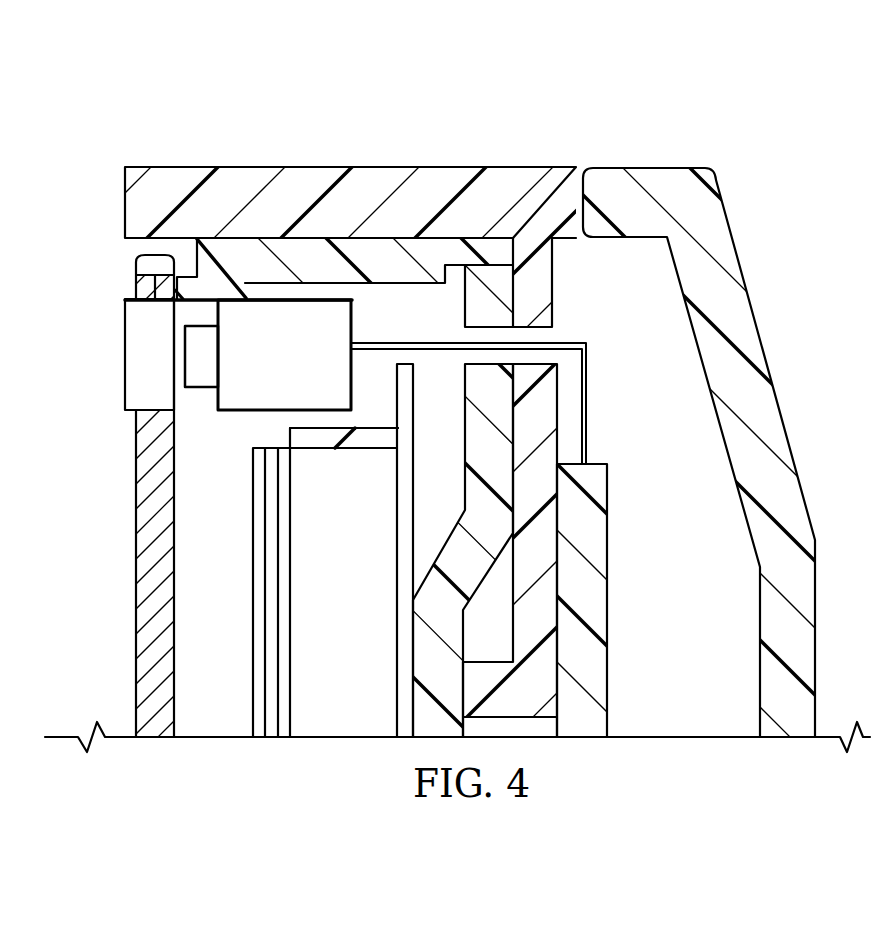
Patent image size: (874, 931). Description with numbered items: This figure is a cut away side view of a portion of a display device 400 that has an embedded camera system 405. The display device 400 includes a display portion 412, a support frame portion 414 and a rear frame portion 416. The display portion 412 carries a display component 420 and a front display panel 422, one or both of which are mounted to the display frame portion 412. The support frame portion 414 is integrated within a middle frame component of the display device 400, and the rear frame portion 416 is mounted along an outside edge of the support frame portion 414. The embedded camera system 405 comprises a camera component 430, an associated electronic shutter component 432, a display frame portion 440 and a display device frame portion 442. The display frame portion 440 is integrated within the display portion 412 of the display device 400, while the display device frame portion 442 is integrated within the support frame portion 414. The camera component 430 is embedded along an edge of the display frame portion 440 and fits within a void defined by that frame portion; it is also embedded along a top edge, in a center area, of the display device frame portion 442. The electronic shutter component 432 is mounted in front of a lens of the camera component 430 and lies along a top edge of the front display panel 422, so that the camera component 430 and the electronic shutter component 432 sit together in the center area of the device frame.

The display device 400 is at (602, 66).
The embedded camera system 405 is at (413, 205).
The display frame portion 440 is at (443, 167).
The electronic shutter component 432 is at (125, 356).
The camera component 430 is at (232, 395).
The front display panel 422 is at (137, 533).
The display portion 412 is at (270, 752).
The display component 420 is at (352, 715).
The display device frame portion 442 is at (422, 655).
The support frame portion 414 is at (585, 752).
The rear frame portion 416 is at (788, 752).